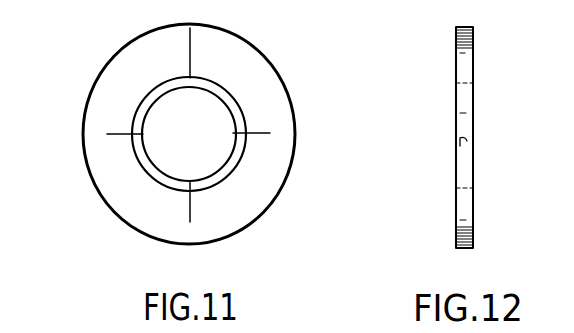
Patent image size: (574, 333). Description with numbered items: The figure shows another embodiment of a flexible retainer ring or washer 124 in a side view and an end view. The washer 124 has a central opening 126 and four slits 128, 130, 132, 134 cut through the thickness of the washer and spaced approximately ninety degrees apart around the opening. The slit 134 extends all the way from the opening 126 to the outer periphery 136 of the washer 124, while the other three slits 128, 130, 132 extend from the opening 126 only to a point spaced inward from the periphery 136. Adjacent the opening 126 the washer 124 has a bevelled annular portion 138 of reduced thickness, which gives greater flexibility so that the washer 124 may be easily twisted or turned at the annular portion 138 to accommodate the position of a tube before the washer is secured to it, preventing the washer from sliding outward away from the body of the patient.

In FIG. 11, the flexible retainer ring or washer 124 is at (128, 36).
In FIG. 12, the flexible retainer ring or washer 124 is at (480, 50).
In FIG. 11, the central opening 126 is at (217, 117).
In FIG. 12, the central opening 126 is at (470, 115).
In FIG. 11, the slit 128 is at (260, 134).
In FIG. 12, the slit 128 is at (463, 150).
In FIG. 11, the slit 130 is at (192, 203).
In FIG. 11, the slit 132 is at (110, 134).
In FIG. 11, the slit 134 is at (191, 57).
In FIG. 11, the outer periphery 136 is at (272, 60).
In FIG. 12, the outer periphery 136 is at (468, 72).
In FIG. 11, the bevelled annular portion 138 is at (245, 121).